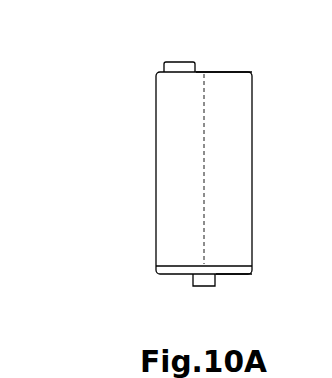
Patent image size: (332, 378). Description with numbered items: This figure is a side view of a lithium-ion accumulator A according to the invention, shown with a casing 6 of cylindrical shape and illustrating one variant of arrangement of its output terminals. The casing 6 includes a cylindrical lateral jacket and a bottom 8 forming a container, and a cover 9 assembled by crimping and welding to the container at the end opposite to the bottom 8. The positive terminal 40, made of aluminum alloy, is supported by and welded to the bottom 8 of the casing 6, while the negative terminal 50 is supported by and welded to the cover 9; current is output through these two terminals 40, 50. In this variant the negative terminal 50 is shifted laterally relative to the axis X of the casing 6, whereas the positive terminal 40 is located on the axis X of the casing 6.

The casing 6 is at (156, 216).
The negative terminal 50 is at (174, 62).
The cover 9 is at (236, 72).
The positive terminal 40 is at (193, 281).
The bottom 8 is at (236, 275).
The lithium-ion accumulator A is at (128, 148).
The axis X is at (202, 319).